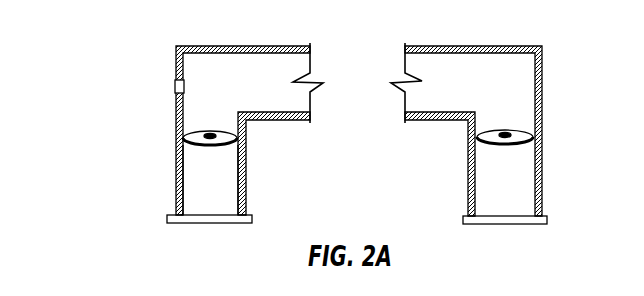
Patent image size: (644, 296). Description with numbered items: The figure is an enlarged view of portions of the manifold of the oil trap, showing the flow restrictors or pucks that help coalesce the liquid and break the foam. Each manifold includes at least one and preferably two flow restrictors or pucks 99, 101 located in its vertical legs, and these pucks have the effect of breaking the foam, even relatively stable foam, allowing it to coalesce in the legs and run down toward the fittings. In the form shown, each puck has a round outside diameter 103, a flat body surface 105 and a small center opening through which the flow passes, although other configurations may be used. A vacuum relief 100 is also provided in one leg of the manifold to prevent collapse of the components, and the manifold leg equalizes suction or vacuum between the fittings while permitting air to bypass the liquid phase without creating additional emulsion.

The flow restrictor 99 is at (227, 98).
The vacuum relief 100 is at (145, 69).
The flow restrictor 101 is at (478, 107).
The round outside diameter 103 is at (172, 179).
The flat body surface 105 is at (172, 119).